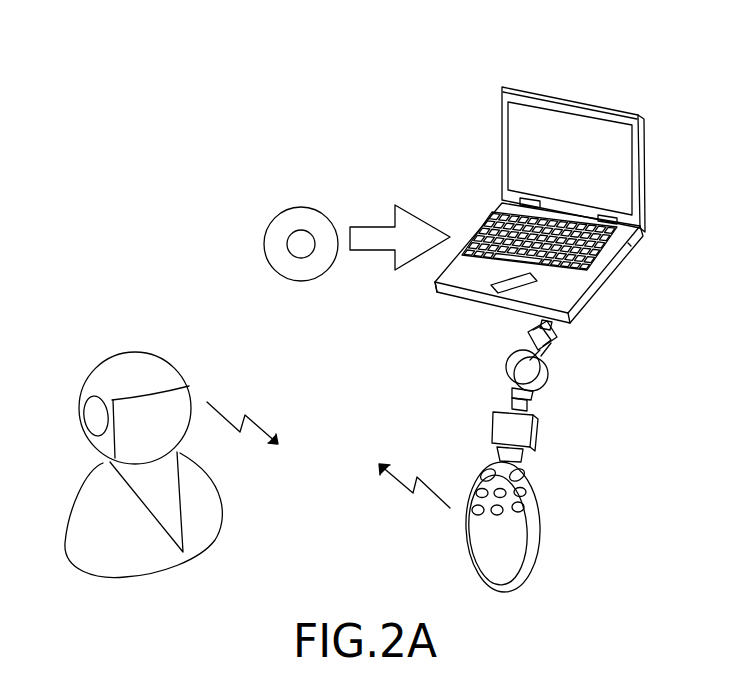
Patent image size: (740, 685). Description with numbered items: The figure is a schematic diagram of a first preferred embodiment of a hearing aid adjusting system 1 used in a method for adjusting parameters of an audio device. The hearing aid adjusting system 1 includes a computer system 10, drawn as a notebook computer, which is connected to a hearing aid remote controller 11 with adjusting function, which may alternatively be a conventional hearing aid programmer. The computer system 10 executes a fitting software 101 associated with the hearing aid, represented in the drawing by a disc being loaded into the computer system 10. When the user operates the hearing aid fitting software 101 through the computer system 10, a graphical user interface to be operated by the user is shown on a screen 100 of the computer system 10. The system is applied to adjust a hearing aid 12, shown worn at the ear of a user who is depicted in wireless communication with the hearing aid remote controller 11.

The hearing aid adjusting system 1 is at (437, 82).
The computer system 10 is at (585, 98).
The screen 100 is at (618, 163).
The fitting software 101 is at (280, 222).
The hearing aid remote controller 11 is at (515, 535).
The hearing aid 12 is at (92, 412).